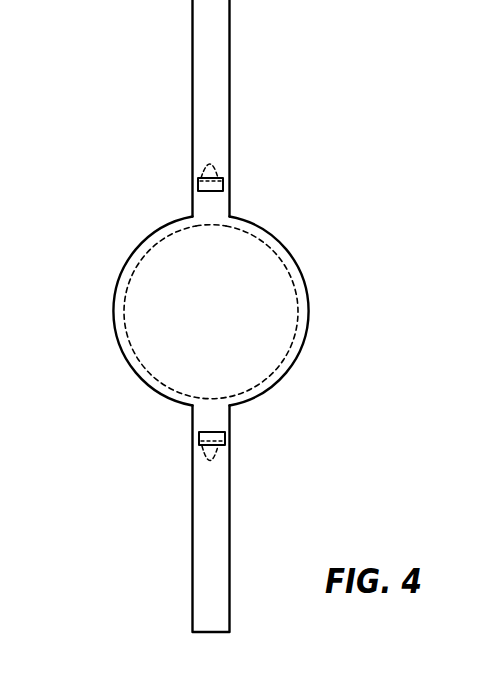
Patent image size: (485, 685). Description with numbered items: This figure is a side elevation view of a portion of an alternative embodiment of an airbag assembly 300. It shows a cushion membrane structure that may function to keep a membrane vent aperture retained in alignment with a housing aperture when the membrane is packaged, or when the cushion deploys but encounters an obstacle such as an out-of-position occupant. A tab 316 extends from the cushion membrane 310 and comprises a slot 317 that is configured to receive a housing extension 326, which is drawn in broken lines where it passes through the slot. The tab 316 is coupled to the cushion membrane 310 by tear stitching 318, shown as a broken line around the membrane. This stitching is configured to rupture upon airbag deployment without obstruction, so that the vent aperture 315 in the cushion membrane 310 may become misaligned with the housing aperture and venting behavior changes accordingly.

The airbag assembly 300 is at (104, 96).
The cushion membrane 310 is at (102, 341).
The vent aperture 315 is at (265, 290).
The tab 316 is at (221, 72).
The slot 317 is at (223, 185).
The tear stitching 318 is at (207, 226).
The housing extension 326 is at (200, 176).